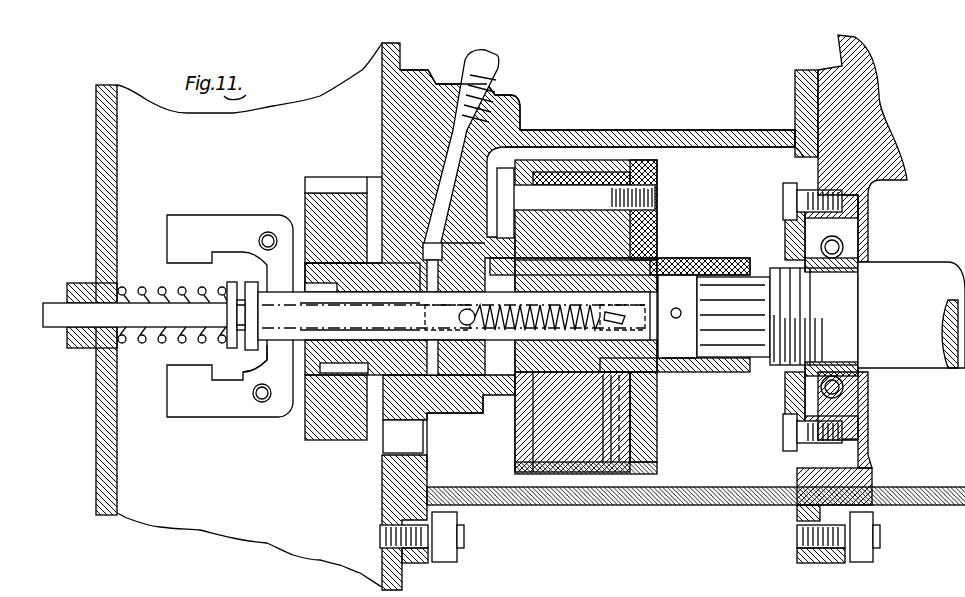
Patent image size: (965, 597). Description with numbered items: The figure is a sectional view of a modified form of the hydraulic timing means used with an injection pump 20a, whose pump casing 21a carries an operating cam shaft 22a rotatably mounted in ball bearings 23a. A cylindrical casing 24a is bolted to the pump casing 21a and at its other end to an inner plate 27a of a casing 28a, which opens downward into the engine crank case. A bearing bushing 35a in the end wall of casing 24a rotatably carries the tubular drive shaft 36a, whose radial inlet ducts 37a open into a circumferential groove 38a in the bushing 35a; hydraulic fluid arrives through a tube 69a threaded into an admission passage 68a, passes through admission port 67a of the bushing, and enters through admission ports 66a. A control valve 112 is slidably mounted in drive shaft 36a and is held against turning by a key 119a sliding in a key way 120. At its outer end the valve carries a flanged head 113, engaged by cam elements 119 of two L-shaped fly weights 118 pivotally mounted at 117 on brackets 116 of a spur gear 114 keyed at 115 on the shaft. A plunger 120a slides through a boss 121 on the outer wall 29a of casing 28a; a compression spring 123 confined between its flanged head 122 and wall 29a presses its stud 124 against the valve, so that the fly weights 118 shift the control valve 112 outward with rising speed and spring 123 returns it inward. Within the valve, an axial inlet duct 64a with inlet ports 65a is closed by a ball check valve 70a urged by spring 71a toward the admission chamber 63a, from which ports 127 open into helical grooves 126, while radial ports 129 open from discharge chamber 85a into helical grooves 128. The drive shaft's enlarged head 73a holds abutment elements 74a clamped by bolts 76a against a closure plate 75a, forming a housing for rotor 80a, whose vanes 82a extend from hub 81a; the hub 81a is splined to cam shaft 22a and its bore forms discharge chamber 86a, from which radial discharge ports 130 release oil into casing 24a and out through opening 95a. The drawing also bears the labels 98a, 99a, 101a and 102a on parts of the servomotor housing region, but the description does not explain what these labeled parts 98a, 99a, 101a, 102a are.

The casing 28a is at (146, 162).
The outer wall 29a is at (96, 417).
The boss 121 is at (70, 284).
The plunger 120a is at (60, 327).
The compression spring 123 is at (138, 350).
The fly weights 118 is at (197, 220).
The pivot 117 is at (268, 231).
The cam elements 119 is at (228, 318).
The flanged head 113 is at (254, 283).
The stud 124 is at (236, 300).
The flanged head 122 is at (234, 343).
The key way 120 is at (318, 280).
The inner plate 27a is at (388, 117).
The drive shaft 36a is at (343, 220).
The key 119a is at (342, 288).
The admission passage 68a is at (440, 157).
The tube 69a is at (500, 78).
The admission port 67a is at (425, 252).
The admission ports 66a is at (415, 267).
The radial inlet ducts 37a is at (452, 265).
The cylindrical casing 24a is at (690, 133).
The cylindrical head 73a is at (572, 165).
The abutment elements 74a is at (630, 218).
The bolts 76a is at (598, 190).
The hub 81a is at (658, 262).
The stator 98a is at (548, 268).
The stator lamination 101a is at (566, 280).
The compression spring 71a is at (565, 367).
The end ring 99a is at (660, 446).
The vanes 82a is at (608, 468).
The helical grooves 126 is at (580, 355).
The ports 127 is at (572, 330).
The winding 102a is at (640, 392).
The control valve 112 is at (300, 312).
The axial inlet duct 64a is at (429, 321).
The inlet ports 65a is at (360, 316).
The ball check valve 70a is at (466, 310).
The discharge chamber 85a is at (677, 316).
The helical grooves 128 is at (675, 322).
The radial ports 129 is at (676, 347).
The discharge chamber 86a is at (700, 272).
The radial discharge ports 130 is at (698, 272).
The ball bearings 23a is at (868, 258).
The injection pump 20a is at (882, 85).
The pump casing 21a is at (885, 136).
The cam shaft 22a is at (900, 350).
The rotor 80a is at (548, 470).
The closure plate 75a is at (700, 430).
The brackets 116 is at (293, 412).
The spur gear 114 is at (345, 448).
The key 115 is at (309, 440).
The bearing bushing 35a is at (470, 400).
The circumferential groove 38a is at (436, 395).
The admission chamber 63a is at (493, 380).
The opening 95a is at (393, 460).